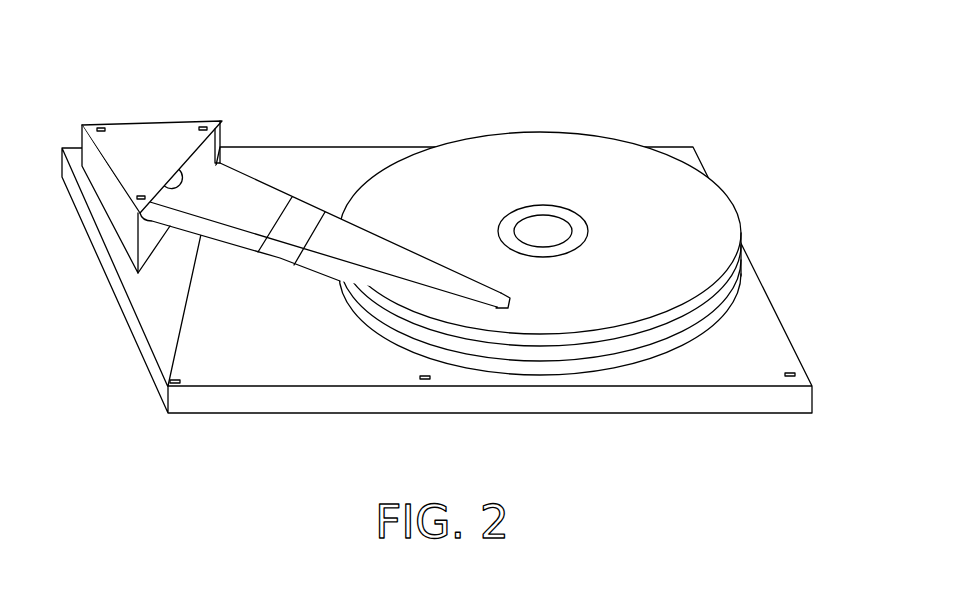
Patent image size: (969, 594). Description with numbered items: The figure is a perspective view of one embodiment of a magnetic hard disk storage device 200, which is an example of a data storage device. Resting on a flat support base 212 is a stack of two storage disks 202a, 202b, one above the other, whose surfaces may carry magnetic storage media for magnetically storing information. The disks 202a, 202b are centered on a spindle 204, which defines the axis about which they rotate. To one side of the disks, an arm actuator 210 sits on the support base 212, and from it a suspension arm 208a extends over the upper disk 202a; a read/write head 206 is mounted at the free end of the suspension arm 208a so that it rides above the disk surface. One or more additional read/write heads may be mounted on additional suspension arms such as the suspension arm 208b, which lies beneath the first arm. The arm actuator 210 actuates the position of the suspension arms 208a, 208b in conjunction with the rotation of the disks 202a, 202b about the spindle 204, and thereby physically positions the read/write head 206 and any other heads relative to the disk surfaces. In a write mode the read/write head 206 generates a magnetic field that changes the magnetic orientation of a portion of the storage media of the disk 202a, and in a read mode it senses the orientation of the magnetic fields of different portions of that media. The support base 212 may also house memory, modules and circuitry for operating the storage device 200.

The magnetic hard disk storage device 200 is at (449, 217).
The storage disk 202a is at (728, 206).
The storage disk 202b is at (742, 280).
The spindle 204 is at (584, 212).
The read/write head 206 is at (493, 290).
The suspension arm 208a is at (325, 223).
The suspension arm 208b is at (326, 268).
The arm actuator 210 is at (132, 125).
The support base 212 is at (156, 366).